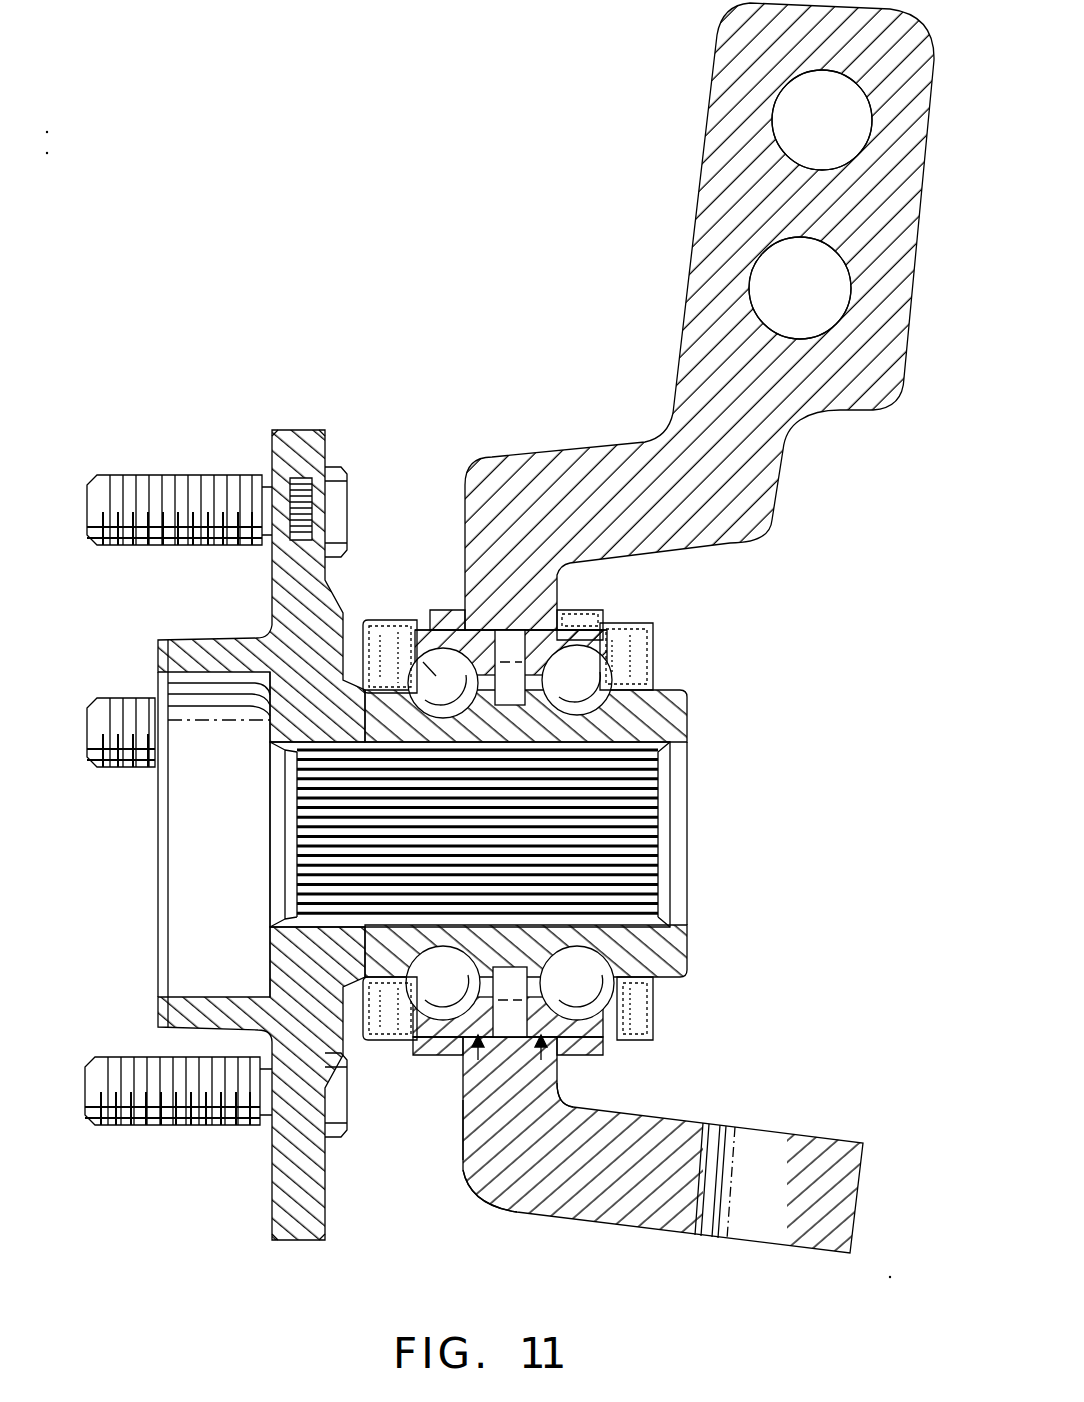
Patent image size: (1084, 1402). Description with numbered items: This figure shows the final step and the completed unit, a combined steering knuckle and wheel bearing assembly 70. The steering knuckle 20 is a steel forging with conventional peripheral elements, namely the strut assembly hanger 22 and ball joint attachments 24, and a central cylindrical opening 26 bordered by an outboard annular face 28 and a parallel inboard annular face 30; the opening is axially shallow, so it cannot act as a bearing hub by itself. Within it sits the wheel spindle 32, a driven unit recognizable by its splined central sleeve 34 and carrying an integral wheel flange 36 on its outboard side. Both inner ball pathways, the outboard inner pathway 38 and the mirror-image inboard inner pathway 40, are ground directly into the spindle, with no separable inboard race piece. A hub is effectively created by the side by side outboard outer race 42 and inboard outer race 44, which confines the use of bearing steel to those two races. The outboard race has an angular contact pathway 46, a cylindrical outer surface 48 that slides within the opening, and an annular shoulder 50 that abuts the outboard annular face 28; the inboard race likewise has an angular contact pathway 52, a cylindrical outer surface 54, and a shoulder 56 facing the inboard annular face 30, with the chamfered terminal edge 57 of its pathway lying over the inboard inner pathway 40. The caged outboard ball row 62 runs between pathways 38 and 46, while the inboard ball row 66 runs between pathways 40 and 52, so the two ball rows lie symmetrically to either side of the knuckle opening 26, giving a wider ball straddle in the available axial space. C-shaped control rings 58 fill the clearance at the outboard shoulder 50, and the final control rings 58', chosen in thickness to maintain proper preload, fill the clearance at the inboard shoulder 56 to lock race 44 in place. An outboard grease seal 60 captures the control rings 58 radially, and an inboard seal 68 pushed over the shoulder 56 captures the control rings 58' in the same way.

The steering knuckle 20 is at (556, 440).
The strut assembly hanger 22 is at (725, 185).
The ball joint attachments 24 is at (830, 1162).
The central cylindrical opening 26 is at (465, 1133).
The outboard annular face 28 is at (465, 1140).
The inboard annular face 30 is at (557, 1083).
The wheel spindle 32 is at (222, 628).
The splined central sleeve 34 is at (645, 828).
The wheel flange 36 is at (300, 447).
The outboard inner pathway 38 is at (440, 967).
The inboard inner pathway 40 is at (600, 963).
The outboard outer race 42 is at (478, 1060).
The inboard outer race 44 is at (541, 1060).
The angular contact pathway 46 is at (410, 1033).
The outer surface 48 is at (490, 630).
The annular shoulder 50 is at (445, 675).
The angular contact pathway 52 is at (597, 663).
The cylindrical outer surface 54 is at (535, 630).
The shoulder 56 is at (600, 625).
The terminal edge 57 is at (640, 1000).
The control rings 58 is at (411, 800).
The control rings 58' is at (612, 748).
The outboard grease seal 60 is at (358, 1035).
The outboard ball row 62 is at (397, 623).
The inboard ball row 66 is at (620, 707).
The inboard seal 68 is at (652, 1025).
The combined steering knuckle and wheel bearing assembly 70 is at (435, 385).